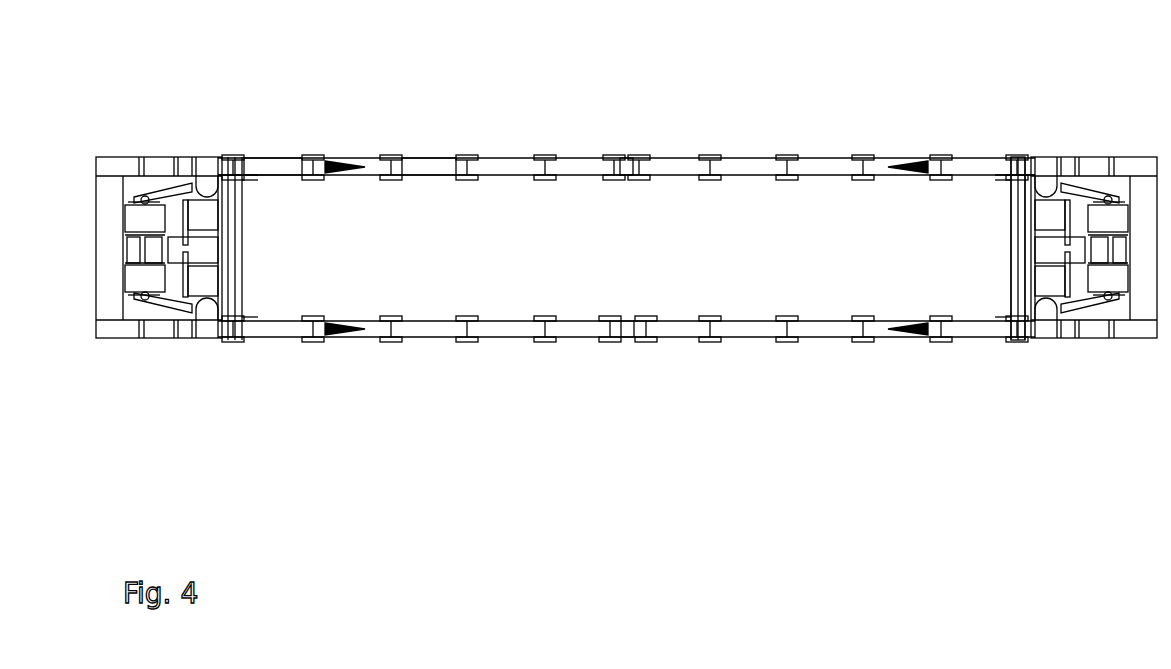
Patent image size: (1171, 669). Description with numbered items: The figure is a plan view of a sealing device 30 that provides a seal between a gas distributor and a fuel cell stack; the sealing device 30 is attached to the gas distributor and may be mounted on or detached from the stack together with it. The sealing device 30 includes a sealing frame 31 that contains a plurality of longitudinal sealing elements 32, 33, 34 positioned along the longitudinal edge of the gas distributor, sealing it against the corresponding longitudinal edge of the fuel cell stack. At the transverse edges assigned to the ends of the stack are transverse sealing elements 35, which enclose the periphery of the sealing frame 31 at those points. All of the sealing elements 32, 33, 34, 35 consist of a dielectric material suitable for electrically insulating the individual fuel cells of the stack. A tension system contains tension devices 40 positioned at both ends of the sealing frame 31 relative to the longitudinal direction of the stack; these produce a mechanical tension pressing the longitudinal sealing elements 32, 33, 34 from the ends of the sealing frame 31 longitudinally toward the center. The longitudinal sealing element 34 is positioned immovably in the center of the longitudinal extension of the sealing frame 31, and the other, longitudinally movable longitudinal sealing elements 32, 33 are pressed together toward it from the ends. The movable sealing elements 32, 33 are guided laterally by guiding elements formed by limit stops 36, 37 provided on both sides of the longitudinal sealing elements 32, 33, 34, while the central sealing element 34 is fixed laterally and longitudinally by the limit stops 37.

The sealing device 30 is at (129, 75).
The sealing frame 31 is at (780, 117).
The longitudinal sealing element 32 is at (414, 167).
The longitudinal sealing element 33 is at (276, 167).
The longitudinal sealing element 34 is at (625, 165).
The transverse sealing element 35 is at (1027, 206).
The limit stop 36 is at (545, 156).
The limit stop 37 is at (641, 156).
The tension device 40 is at (231, 416).